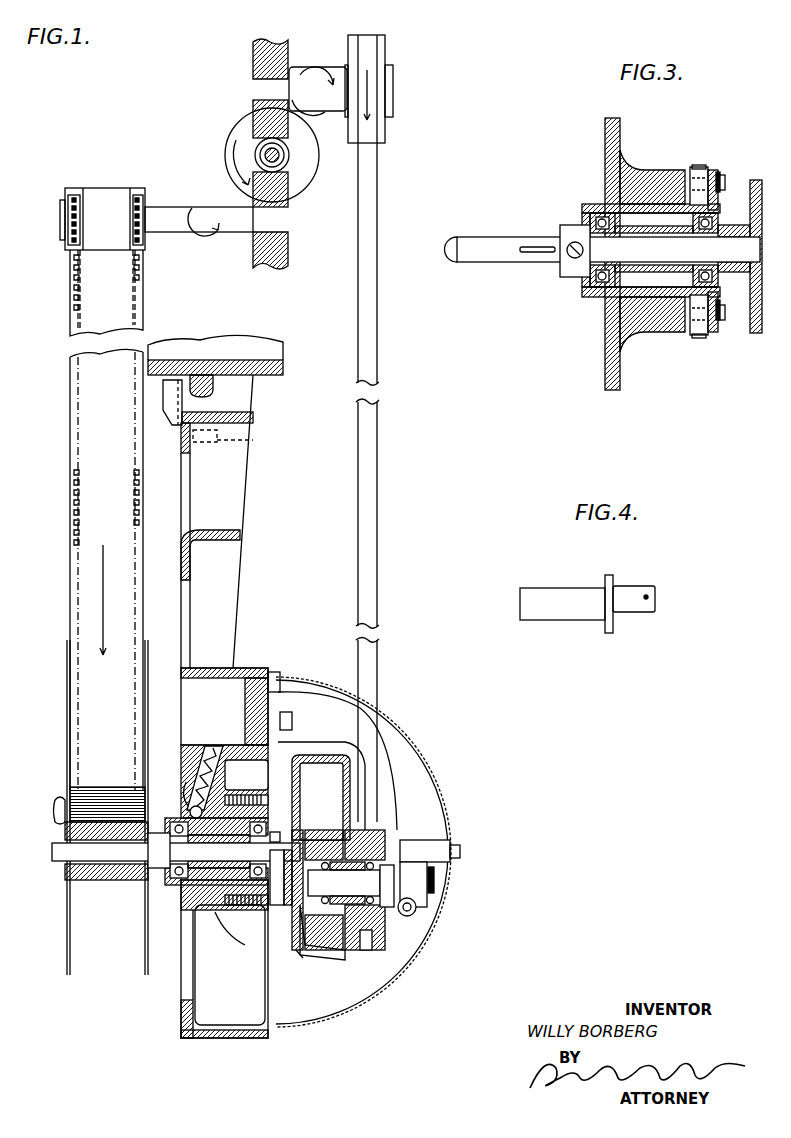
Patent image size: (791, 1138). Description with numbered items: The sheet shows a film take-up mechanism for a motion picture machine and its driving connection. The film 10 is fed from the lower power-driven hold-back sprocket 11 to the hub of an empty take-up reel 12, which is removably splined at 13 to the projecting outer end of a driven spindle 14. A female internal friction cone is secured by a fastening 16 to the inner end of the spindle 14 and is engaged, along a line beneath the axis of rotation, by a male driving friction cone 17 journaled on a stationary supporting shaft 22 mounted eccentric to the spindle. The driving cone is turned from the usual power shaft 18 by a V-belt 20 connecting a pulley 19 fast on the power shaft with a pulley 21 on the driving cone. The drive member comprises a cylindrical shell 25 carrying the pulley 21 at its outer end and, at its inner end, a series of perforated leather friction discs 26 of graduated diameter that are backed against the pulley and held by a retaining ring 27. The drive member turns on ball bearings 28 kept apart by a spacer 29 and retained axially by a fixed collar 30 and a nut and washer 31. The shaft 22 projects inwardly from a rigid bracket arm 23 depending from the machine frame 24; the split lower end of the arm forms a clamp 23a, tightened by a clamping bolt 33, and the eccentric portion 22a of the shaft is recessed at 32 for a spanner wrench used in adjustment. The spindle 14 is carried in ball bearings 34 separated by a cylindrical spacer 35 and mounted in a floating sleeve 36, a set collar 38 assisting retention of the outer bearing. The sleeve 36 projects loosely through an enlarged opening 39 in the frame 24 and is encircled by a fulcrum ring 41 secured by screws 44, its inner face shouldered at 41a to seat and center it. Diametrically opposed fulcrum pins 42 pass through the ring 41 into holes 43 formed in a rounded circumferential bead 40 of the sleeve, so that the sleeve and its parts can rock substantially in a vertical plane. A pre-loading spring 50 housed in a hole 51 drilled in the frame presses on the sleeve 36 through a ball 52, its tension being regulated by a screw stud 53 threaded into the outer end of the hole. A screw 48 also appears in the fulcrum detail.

In FIG. 1, the film 10 is at (68, 405).
In FIG. 1, the hold-back sprocket 11 is at (150, 190).
In FIG. 1, the take-up reel 12 is at (65, 716).
In FIG. 1, the spline 13 is at (152, 830).
In FIG. 1, the driven spindle 14 is at (185, 882).
In FIG. 3, the driven spindle 14 is at (734, 255).
In FIG. 1, the fastening 16 is at (286, 826).
In FIG. 1, the male driving friction cone 17 is at (333, 822).
In FIG. 1, the power shaft 18 is at (298, 72).
In FIG. 1, the pulley 19 is at (352, 35).
In FIG. 1, the V-belt 20 is at (372, 170).
In FIG. 1, the pulley 21 is at (376, 930).
In FIG. 1, the stationary supporting shaft 22 is at (357, 889).
In FIG. 4, the stationary supporting shaft 22 is at (570, 580).
In FIG. 1, the eccentric portion 22a is at (440, 872).
In FIG. 4, the eccentric portion 22a is at (643, 585).
In FIG. 1, the bracket arm 23 is at (403, 797).
In FIG. 1, the clamp 23a is at (440, 907).
In FIG. 1, the machine frame 24 is at (225, 636).
In FIG. 3, the machine frame 24 is at (647, 172).
In FIG. 1, the cylindrical shell 25 is at (300, 935).
In FIG. 1, the friction discs 26 is at (330, 824).
In FIG. 1, the retaining ring 27 is at (302, 956).
In FIG. 1, the ball bearings 28 is at (310, 893).
In FIG. 1, the spacer 29 is at (368, 945).
In FIG. 1, the fixed collar 30 is at (386, 888).
In FIG. 4, the fixed collar 30 is at (609, 633).
In FIG. 1, the nut and washer 31 is at (308, 883).
In FIG. 1, the recess 32 is at (440, 890).
In FIG. 4, the recess 32 is at (650, 597).
In FIG. 1, the clamping bolt 33 is at (417, 912).
In FIG. 1, the ball bearings 34 is at (100, 945).
In FIG. 3, the ball bearings 34 is at (563, 288).
In FIG. 1, the cylindrical spacer 35 is at (219, 851).
In FIG. 3, the cylindrical spacer 35 is at (654, 257).
In FIG. 1, the floating sleeve 36 is at (178, 884).
In FIG. 3, the floating sleeve 36 is at (605, 294).
In FIG. 1, the set collar 38 is at (106, 851).
In FIG. 3, the set collar 38 is at (565, 226).
In FIG. 1, the opening 39 is at (186, 806).
In FIG. 3, the opening 39 is at (608, 203).
In FIG. 1, the circumferential bead 40 is at (282, 814).
In FIG. 3, the circumferential bead 40 is at (718, 210).
In FIG. 1, the fulcrum ring 41 is at (252, 792).
In FIG. 3, the fulcrum ring 41 is at (697, 328).
In FIG. 1, the shoulder 41a is at (258, 800).
In FIG. 3, the fulcrum pins 42 is at (727, 190).
In FIG. 3, the holes 43 is at (706, 298).
In FIG. 1, the screws 44 is at (262, 935).
In FIG. 3, the screws 44 is at (722, 174).
In FIG. 3, the screw 48 is at (683, 172).
In FIG. 1, the pre-loading spring 50 is at (190, 748).
In FIG. 1, the hole 51 is at (215, 746).
In FIG. 1, the ball 52 is at (186, 782).
In FIG. 1, the screw stud 53 is at (204, 745).